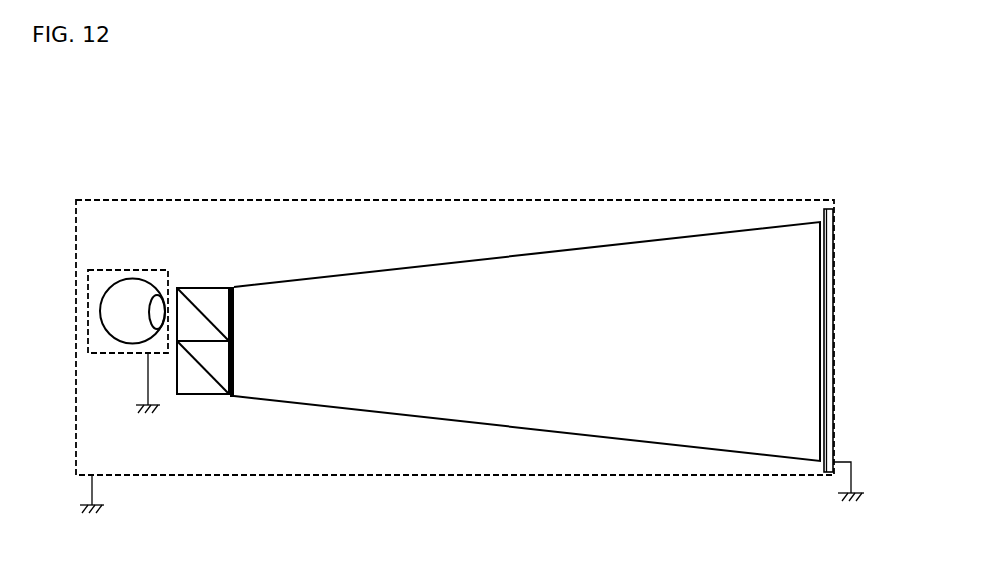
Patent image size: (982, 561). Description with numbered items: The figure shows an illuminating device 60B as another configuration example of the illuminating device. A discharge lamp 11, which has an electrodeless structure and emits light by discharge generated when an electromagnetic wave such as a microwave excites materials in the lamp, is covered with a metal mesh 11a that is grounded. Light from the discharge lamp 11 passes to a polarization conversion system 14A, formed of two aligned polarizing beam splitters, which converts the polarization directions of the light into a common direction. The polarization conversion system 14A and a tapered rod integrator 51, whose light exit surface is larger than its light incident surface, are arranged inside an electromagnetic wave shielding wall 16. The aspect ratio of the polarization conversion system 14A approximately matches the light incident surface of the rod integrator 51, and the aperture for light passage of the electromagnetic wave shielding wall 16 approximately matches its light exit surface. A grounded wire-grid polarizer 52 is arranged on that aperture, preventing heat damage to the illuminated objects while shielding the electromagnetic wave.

The illuminating device 60B is at (386, 193).
The electromagnetic wave shielding wall 16 is at (243, 473).
The metal mesh 11a is at (89, 355).
The discharge lamp 11 is at (148, 281).
The polarization conversion system 14A is at (213, 281).
The rod integrator 51 is at (500, 268).
The wire-grid polarizer 52 is at (827, 208).